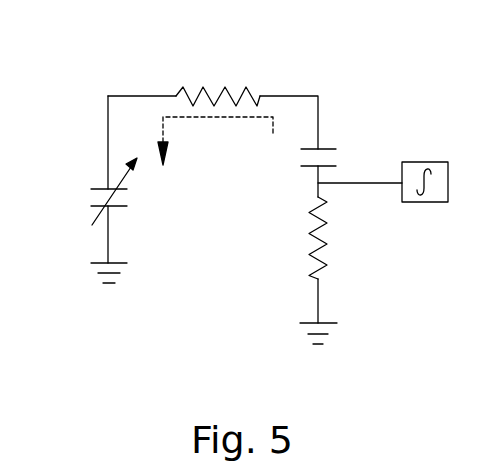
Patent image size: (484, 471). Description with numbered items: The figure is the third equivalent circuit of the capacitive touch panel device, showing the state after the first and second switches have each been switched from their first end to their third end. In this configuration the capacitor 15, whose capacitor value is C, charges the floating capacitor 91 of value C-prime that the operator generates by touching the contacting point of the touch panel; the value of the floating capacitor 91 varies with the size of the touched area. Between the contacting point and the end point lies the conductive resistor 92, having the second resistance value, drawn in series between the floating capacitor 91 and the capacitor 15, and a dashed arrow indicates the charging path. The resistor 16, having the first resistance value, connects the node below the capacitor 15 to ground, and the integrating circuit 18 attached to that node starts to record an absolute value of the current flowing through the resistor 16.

The floating capacitor 91 is at (90, 199).
The conductive resistor 92 is at (245, 88).
The capacitor 15 is at (340, 157).
The resistor 16 is at (330, 240).
The integrating circuit 18 is at (425, 162).